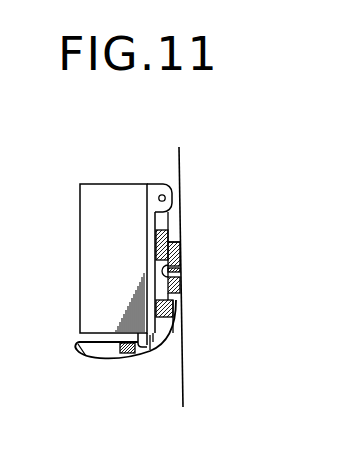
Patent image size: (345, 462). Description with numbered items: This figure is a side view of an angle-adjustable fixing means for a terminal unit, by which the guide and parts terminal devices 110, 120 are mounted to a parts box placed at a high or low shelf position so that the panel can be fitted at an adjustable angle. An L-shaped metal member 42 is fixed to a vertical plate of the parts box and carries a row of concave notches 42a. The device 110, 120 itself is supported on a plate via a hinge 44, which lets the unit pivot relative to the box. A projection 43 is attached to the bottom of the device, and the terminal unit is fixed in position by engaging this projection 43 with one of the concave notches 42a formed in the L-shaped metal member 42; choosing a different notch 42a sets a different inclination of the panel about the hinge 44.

The guide terminal device 110 is at (105, 236).
The parts terminal device 120 is at (99, 198).
The L-shaped metal member 42 is at (164, 335).
The concave notch 42a is at (100, 358).
The projection 43 is at (133, 360).
The hinge 44 is at (166, 197).